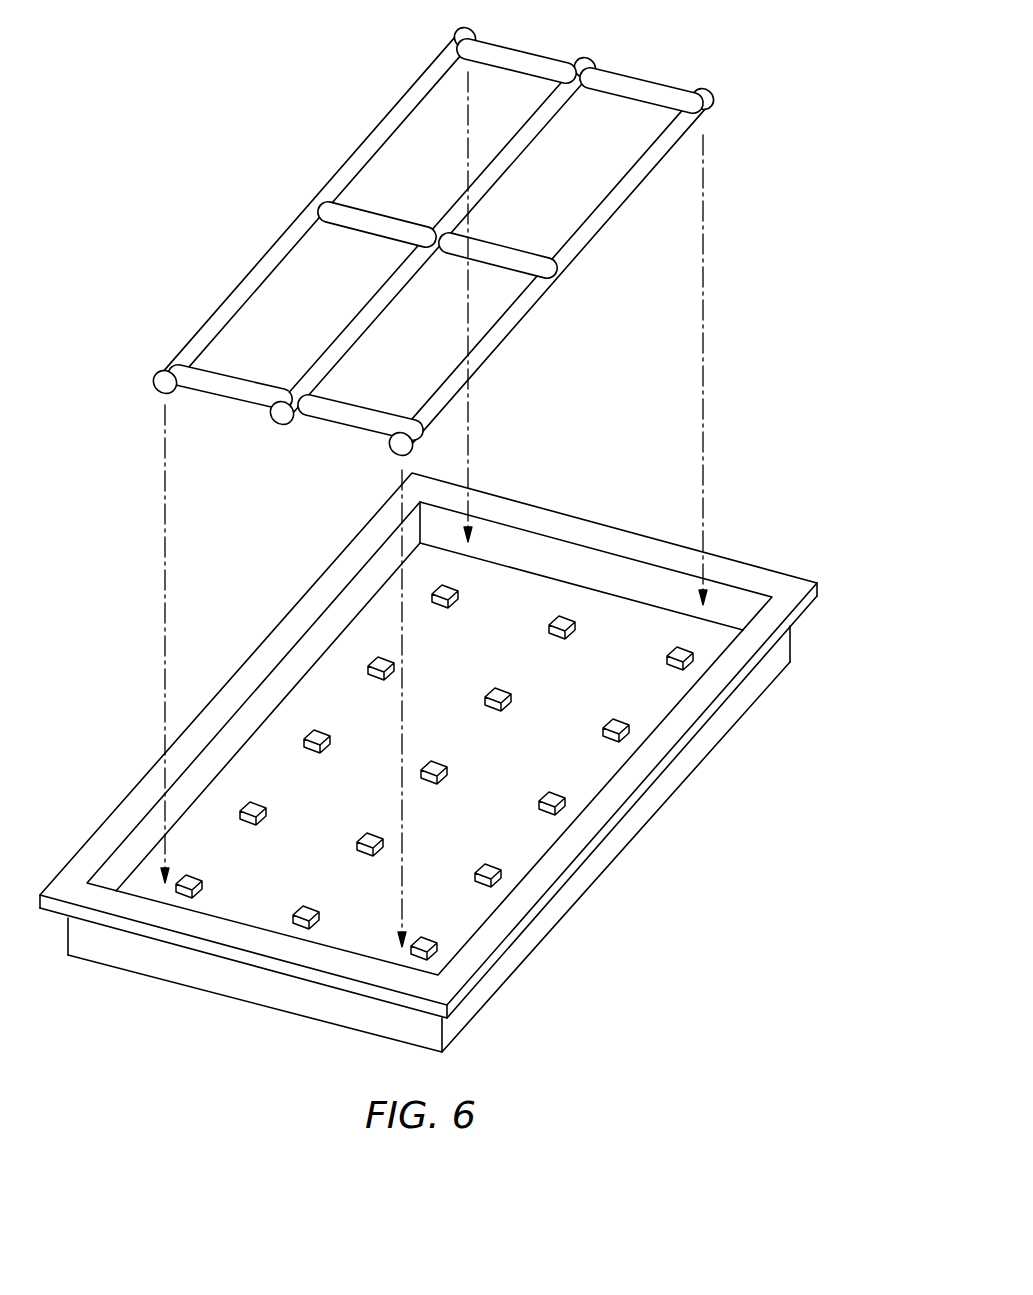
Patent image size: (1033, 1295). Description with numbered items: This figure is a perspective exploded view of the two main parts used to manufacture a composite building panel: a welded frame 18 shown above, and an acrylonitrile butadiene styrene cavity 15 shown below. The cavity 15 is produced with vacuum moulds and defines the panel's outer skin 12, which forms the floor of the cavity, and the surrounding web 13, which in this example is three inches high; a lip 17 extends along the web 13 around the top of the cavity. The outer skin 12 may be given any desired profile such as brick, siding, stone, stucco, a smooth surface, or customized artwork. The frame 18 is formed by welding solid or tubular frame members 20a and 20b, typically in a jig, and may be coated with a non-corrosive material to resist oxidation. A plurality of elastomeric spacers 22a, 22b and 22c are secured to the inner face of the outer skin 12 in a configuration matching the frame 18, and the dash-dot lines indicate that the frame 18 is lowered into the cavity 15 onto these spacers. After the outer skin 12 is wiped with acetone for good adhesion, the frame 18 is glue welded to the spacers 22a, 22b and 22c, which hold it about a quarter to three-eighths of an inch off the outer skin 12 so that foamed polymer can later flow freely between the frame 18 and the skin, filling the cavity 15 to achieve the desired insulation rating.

The outer skin 12 is at (338, 797).
The web 13 is at (713, 730).
The cavity 15 is at (451, 760).
The lip 17 is at (733, 662).
The frame 18 is at (454, 235).
The frame member 20a is at (372, 313).
The frame member 20b is at (490, 342).
The elastomeric spacer 22a is at (358, 848).
The elastomeric spacer 22b is at (492, 867).
The elastomeric spacer 22c is at (442, 762).